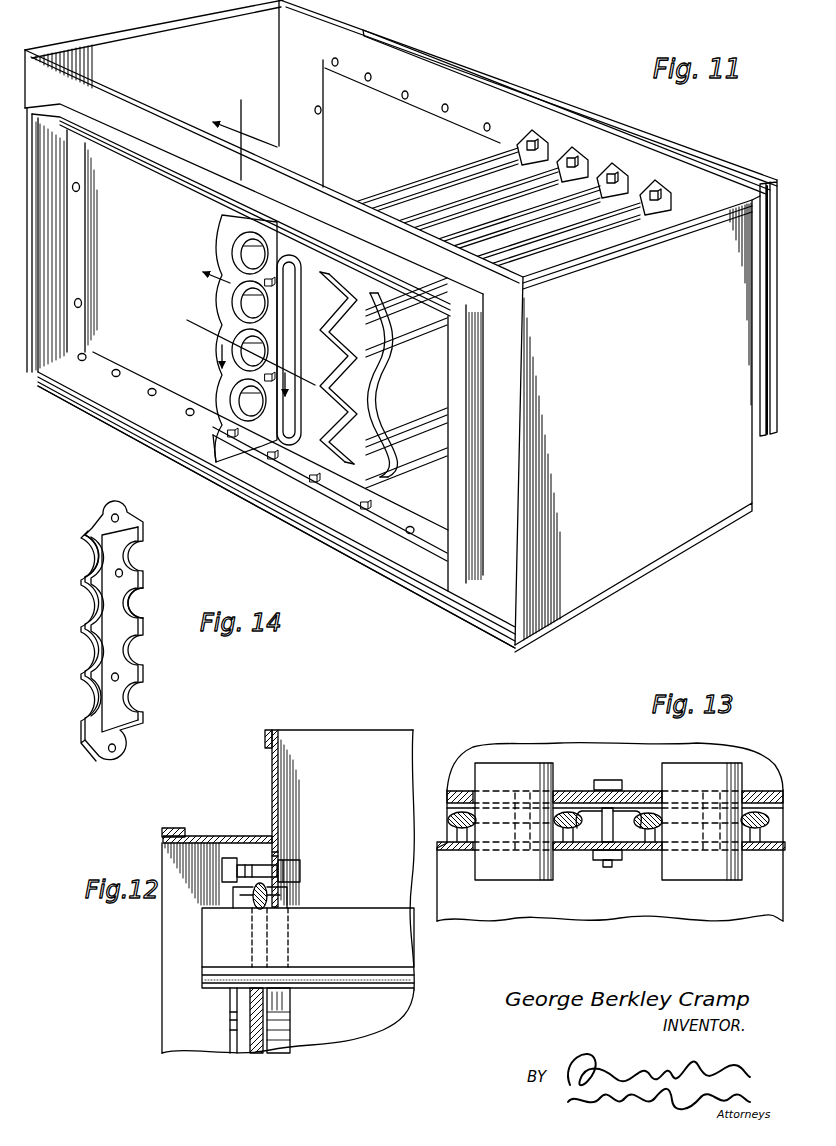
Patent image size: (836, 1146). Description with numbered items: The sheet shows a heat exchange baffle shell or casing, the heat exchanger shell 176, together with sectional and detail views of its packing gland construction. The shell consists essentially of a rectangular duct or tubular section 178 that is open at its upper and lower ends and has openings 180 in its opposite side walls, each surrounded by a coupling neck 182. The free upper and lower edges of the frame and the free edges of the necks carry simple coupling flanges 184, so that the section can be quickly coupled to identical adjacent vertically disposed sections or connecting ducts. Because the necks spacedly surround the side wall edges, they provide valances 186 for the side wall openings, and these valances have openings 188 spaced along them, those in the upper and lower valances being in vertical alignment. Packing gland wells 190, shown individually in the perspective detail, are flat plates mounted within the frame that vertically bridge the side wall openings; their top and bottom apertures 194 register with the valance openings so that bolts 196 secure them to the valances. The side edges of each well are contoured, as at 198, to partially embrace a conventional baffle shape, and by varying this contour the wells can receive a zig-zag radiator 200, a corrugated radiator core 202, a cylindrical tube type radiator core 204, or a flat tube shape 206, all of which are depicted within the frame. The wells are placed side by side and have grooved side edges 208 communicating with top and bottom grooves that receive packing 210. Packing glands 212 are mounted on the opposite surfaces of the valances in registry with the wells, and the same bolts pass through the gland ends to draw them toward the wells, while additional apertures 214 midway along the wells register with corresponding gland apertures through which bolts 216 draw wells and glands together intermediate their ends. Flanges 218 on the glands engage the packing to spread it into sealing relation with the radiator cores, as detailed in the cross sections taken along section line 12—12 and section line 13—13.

In FIG. 11, the section line 12— 12 is at (232, 195).
In FIG. 11, the section line 13— 13 is at (253, 367).
In FIG. 11, the heat exchanger shell 176 is at (550, 72).
In FIG. 11, the rectangular duct or tubular section 178 is at (658, 547).
In FIG. 12, the rectangular duct or tubular section 178 is at (279, 786).
In FIG. 11, the side wall openings 180 is at (326, 78).
In FIG. 11, the coupling necks 182 is at (463, 574).
In FIG. 12, the coupling necks 182 is at (231, 834).
In FIG. 11, the coupling flanges 184 is at (622, 242).
In FIG. 12, the coupling flanges 184 is at (267, 732).
In FIG. 13, the coupling flanges 184 is at (608, 821).
In FIG. 11, the valances 186 is at (87, 300).
In FIG. 12, the valances 186 is at (278, 851).
In FIG. 11, the valance openings 188 is at (405, 100).
In FIG. 11, the packing gland wells 190 is at (543, 157).
In FIG. 14, the packing gland wells 190 is at (130, 511).
In FIG. 12, the packing gland wells 190 is at (283, 896).
In FIG. 13, the packing gland wells 190 is at (623, 812).
In FIG. 14, the top and bottom apertures 194 is at (114, 513).
In FIG. 11, the bolts 196 is at (357, 512).
In FIG. 12, the bolts 196 is at (300, 869).
In FIG. 14, the contoured side edge 198 is at (94, 567).
In FIG. 13, the contoured side edge 198 is at (560, 766).
In FIG. 11, the zig-zag radiator 200 is at (350, 384).
In FIG. 11, the corrugated radiator core 202 is at (430, 440).
In FIG. 11, the cylindrical tube type radiator core 204 is at (236, 244).
In FIG. 12, the cylindrical tube type radiator core 204 is at (375, 923).
In FIG. 11, the flat tube shape 206 is at (295, 272).
In FIG. 13, the grooved side edges 208 is at (581, 813).
In FIG. 14, the packing 210 is at (141, 598).
In FIG. 12, the packing 210 is at (290, 1032).
In FIG. 13, the packing 210 is at (577, 840).
In FIG. 11, the packing glands 212 is at (303, 455).
In FIG. 12, the packing glands 212 is at (233, 1028).
In FIG. 13, the packing glands 212 is at (633, 848).
In FIG. 14, the additional apertures 214 is at (123, 572).
In FIG. 13, the bolts 216 is at (608, 779).
In FIG. 13, the flanges 218 is at (652, 830).